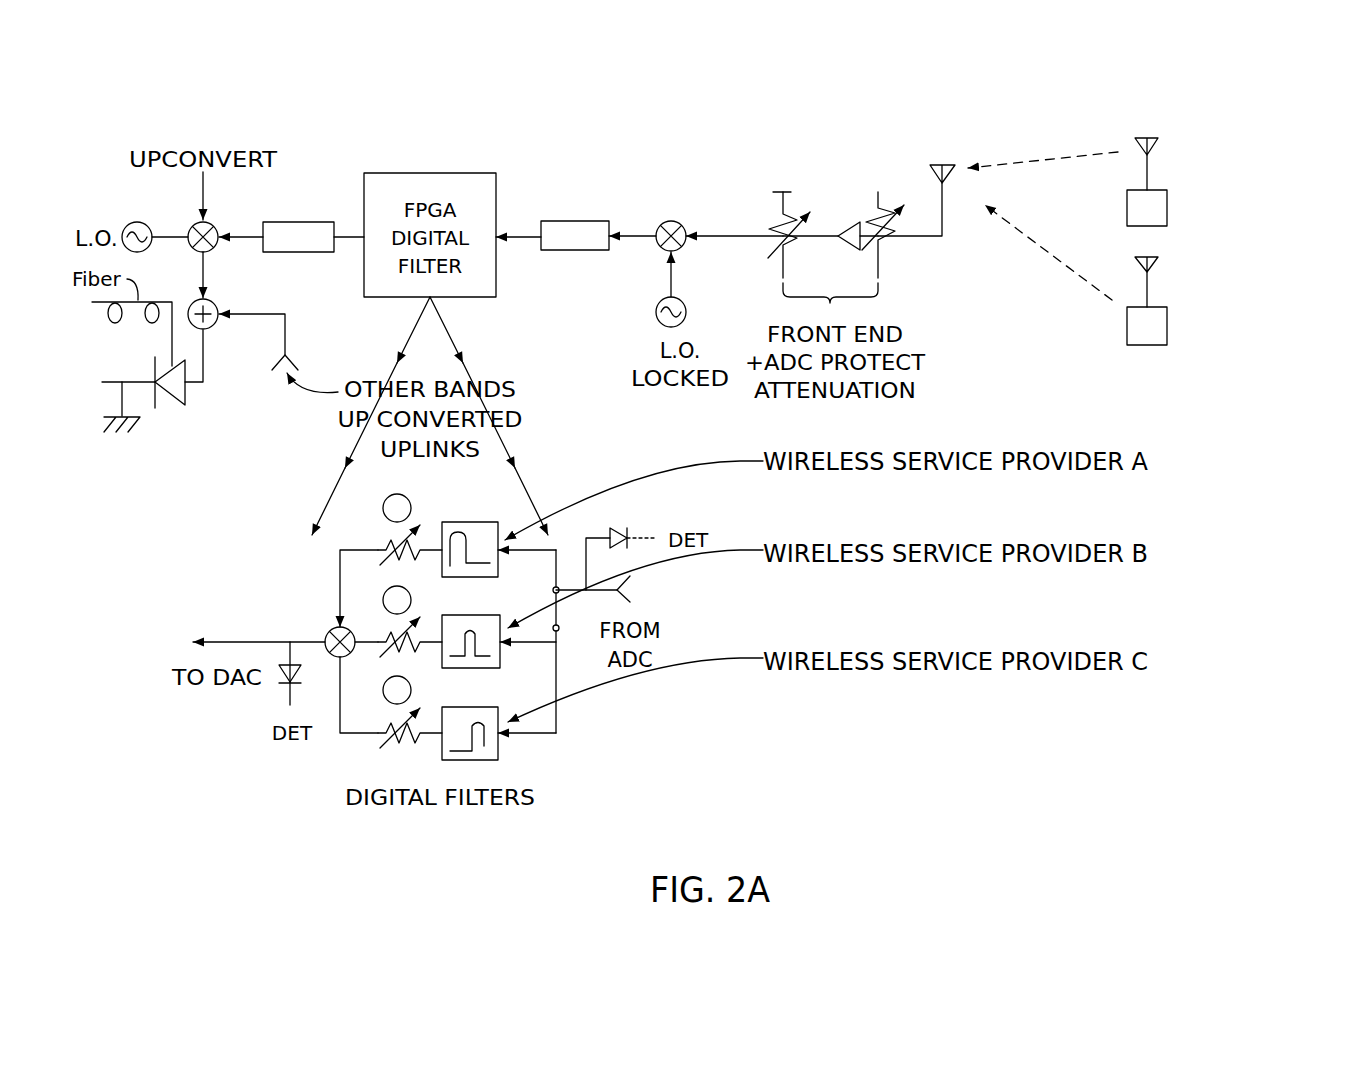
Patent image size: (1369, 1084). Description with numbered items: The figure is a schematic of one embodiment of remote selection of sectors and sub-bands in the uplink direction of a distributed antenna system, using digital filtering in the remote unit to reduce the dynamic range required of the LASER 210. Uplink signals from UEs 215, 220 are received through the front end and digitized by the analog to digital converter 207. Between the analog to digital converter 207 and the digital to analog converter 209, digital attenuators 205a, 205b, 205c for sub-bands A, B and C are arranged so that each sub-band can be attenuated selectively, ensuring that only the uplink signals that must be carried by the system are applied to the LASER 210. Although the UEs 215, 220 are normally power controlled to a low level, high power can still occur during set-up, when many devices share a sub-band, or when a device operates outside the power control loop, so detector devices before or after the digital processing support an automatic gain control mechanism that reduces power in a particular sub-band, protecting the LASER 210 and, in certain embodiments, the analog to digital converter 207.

The analog to digital converter 207 is at (579, 205).
The digital to analog converter 209 is at (300, 206).
The LASER 210 is at (178, 468).
The UE 215 is at (1224, 182).
The UE 220 is at (1246, 301).
The digital attenuator 205a is at (438, 526).
The digital attenuator 205b is at (439, 626).
The digital attenuator 205c is at (438, 717).